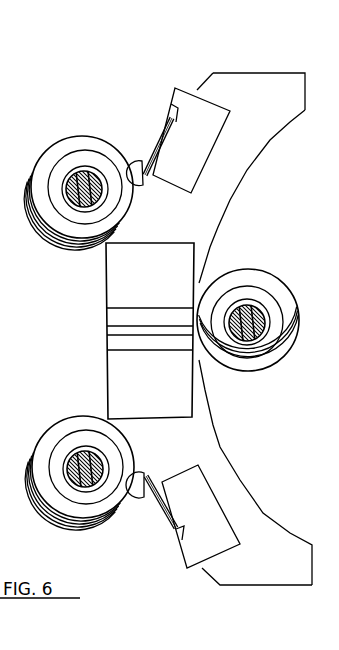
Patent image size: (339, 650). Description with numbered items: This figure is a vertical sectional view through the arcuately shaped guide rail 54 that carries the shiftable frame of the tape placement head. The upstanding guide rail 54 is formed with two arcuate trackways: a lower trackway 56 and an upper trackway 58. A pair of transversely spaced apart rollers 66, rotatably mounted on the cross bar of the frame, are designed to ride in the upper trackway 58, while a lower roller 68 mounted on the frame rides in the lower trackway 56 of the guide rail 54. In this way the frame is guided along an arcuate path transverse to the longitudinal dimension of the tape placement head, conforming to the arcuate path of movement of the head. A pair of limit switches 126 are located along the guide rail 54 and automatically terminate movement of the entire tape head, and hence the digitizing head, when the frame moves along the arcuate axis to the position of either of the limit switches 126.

The guide rail 54 is at (207, 452).
The lower trackway 56 is at (219, 221).
The upper trackway 58 is at (203, 572).
The rollers 66 is at (72, 142).
The lower roller 68 is at (272, 287).
The limit switches 126 is at (187, 100).